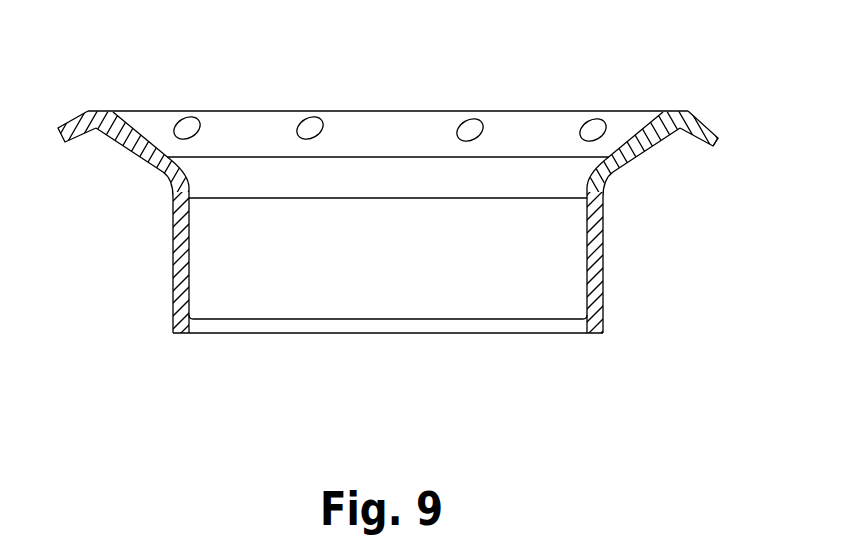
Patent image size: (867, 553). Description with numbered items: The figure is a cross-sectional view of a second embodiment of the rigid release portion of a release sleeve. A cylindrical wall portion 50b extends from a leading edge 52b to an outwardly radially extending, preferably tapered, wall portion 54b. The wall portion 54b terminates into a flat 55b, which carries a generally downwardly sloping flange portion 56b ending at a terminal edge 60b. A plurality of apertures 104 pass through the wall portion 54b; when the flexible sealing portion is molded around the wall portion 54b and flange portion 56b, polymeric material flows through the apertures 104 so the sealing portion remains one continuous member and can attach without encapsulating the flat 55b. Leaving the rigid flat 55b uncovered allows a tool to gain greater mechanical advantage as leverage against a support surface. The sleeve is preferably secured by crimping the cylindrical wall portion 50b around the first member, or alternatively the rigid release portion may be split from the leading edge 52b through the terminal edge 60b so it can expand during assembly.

The cylindrical wall portion 50b is at (170, 269).
The leading edge 52b is at (593, 335).
The wall portion 54b is at (643, 153).
The flat 55b is at (102, 110).
The flange portion 56b is at (700, 117).
The terminal edge 60b is at (716, 142).
The apertures 104 is at (470, 125).